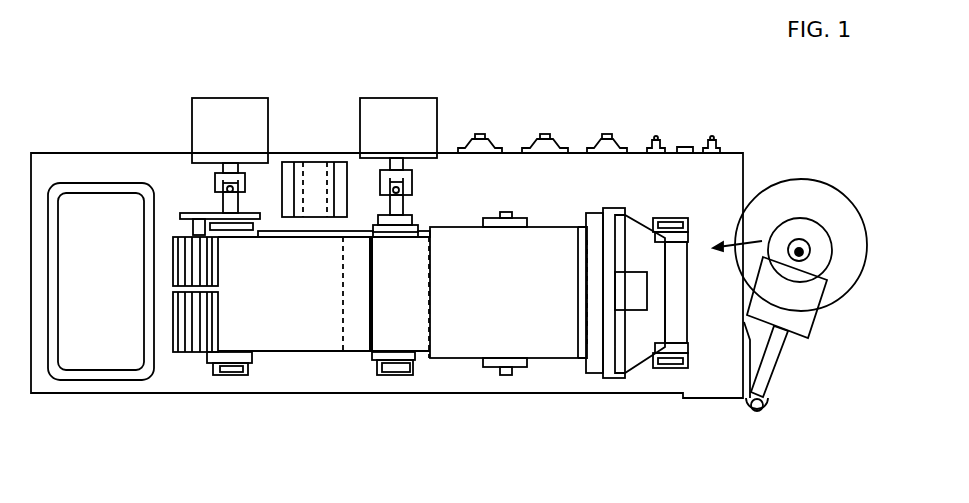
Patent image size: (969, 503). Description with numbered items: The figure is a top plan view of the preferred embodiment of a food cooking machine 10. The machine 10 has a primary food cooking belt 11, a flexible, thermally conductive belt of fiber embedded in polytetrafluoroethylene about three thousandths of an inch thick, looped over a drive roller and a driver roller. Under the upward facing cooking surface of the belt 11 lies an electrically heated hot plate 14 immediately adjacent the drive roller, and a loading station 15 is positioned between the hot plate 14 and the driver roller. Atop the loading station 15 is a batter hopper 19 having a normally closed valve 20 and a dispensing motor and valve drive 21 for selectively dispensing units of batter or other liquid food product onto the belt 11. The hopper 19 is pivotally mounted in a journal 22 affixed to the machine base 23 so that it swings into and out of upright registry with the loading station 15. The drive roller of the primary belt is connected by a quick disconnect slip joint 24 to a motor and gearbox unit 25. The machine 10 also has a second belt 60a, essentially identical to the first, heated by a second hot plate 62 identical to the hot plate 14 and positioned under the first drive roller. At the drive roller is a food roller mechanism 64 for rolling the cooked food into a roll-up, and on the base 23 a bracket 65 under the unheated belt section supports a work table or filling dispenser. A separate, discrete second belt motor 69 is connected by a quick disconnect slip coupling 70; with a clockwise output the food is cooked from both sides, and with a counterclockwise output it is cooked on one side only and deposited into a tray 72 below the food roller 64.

The food cooking machine 10 is at (613, 72).
The primary food cooking belt 11 is at (508, 293).
The electrically heated hot plate 14 is at (463, 360).
The loading station 15 is at (657, 213).
The batter hopper 19 is at (795, 192).
The normally closed valve 20 is at (824, 240).
The dispensing motor and valve drive 21 is at (800, 320).
The journal 22 is at (762, 414).
The machine base 23 is at (780, 340).
The quick disconnect slip joint 24 is at (414, 183).
The motor and gearbox unit 25 is at (394, 97).
The second belt 60a is at (324, 291).
The second hot plate 62 is at (350, 357).
The food roller mechanism 64 is at (183, 358).
The bracket 65 is at (308, 161).
The second belt motor 69 is at (198, 97).
The quick disconnect slip coupling 70 is at (215, 182).
The tray 72 is at (101, 281).